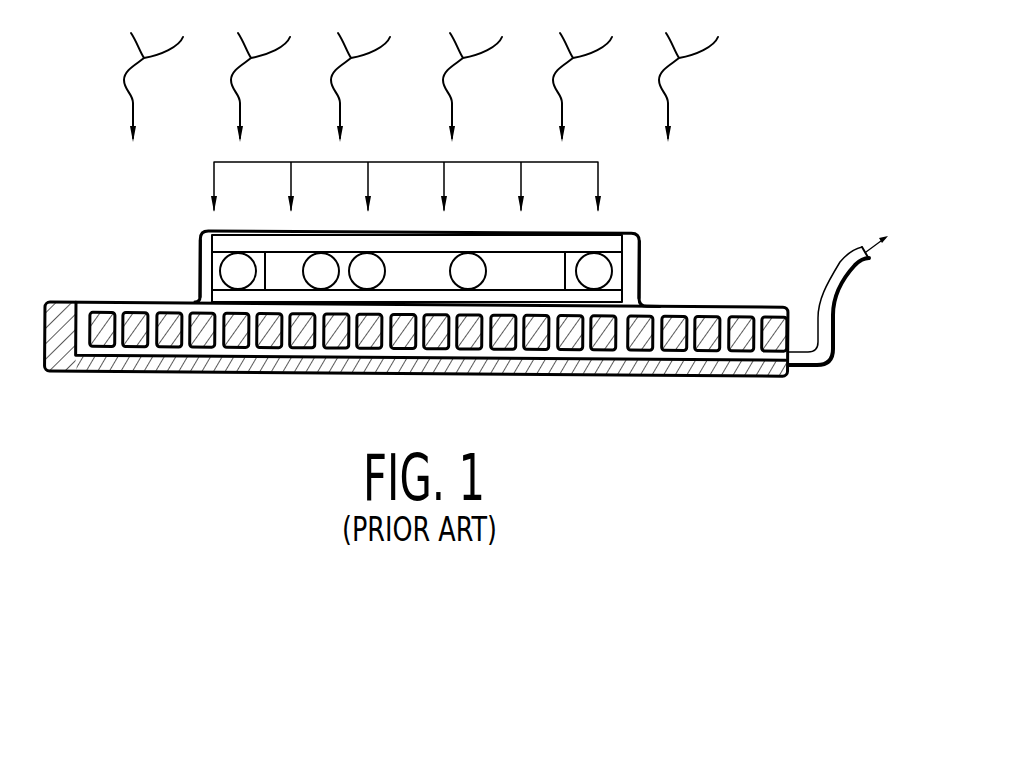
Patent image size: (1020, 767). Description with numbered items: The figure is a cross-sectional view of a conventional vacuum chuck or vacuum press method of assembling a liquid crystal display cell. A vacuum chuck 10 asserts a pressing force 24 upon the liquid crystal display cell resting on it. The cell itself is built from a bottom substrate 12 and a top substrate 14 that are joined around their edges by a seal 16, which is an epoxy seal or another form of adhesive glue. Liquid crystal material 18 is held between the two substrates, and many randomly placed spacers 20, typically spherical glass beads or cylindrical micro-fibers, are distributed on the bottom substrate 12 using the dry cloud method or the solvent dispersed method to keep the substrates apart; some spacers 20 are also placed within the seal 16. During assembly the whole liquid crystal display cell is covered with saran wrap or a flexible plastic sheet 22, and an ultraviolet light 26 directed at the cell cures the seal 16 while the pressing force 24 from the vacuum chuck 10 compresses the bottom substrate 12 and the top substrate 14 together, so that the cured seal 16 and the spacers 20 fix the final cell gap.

The vacuum chuck 10 is at (112, 371).
The bottom substrate 12 is at (610, 297).
The top substrate 14 is at (613, 245).
The seal 16 is at (212, 260).
The liquid crystal material 18 is at (418, 262).
The spacers 20 is at (247, 263).
The flexible plastic sheet 22 is at (416, 308).
The pressing force 24 is at (599, 187).
The ultraviolet light 26 is at (428, 71).